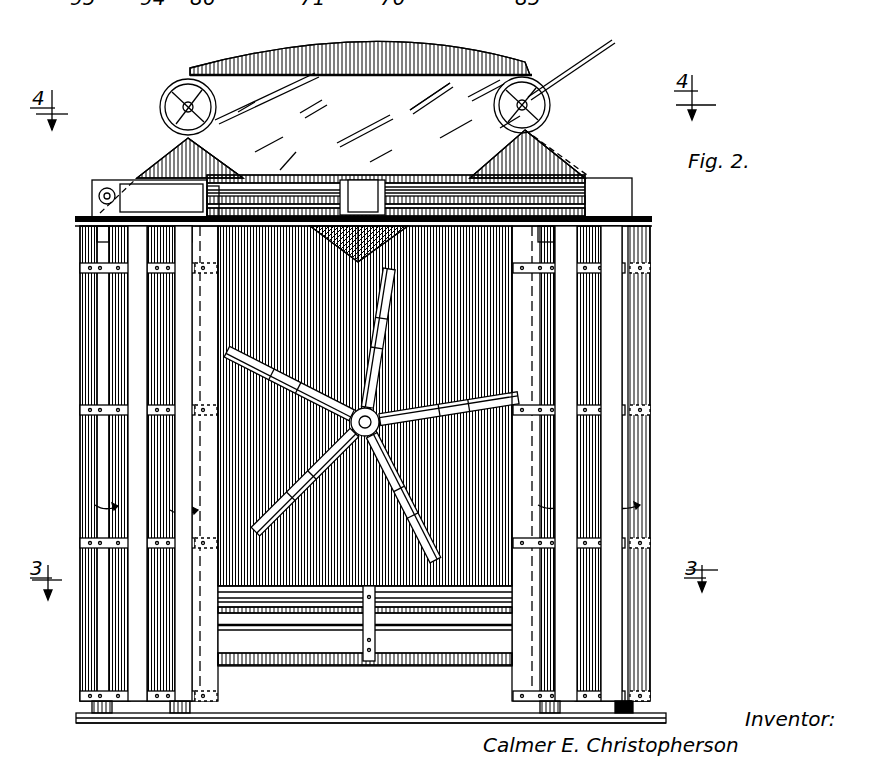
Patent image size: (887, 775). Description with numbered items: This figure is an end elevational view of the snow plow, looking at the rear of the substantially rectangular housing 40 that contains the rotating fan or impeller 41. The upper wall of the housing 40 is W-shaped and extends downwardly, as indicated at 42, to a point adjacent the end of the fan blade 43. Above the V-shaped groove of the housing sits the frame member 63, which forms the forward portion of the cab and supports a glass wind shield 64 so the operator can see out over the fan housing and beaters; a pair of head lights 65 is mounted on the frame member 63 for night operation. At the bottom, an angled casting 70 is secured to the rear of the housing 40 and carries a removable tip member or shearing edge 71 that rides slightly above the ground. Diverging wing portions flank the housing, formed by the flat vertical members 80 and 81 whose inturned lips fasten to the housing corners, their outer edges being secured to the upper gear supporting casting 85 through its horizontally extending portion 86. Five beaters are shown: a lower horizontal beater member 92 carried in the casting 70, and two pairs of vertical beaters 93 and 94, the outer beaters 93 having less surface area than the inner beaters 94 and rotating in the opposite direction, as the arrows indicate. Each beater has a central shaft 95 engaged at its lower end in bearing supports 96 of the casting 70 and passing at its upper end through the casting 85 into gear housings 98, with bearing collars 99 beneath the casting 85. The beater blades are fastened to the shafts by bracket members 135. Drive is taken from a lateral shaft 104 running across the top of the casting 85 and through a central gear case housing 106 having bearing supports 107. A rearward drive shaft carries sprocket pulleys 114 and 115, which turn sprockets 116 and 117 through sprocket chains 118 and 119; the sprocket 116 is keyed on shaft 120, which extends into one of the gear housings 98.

The housing 40 is at (276, 285).
The impeller 41 is at (371, 415).
The W-shaped upper defining wall 42 is at (362, 299).
The fan blade 43 is at (462, 398).
The frame member 63 is at (262, 62).
The wind shield 64 is at (332, 92).
The head lights 65 is at (172, 95).
The angled casting 70 is at (398, 712).
The tip member 71 is at (332, 724).
The vertically extending member 80 is at (100, 240).
The vertically extending member 81 is at (632, 236).
The upper gear supporting casting 85 is at (408, 228).
The horizontally extending portion 86 is at (645, 219).
The lower horizontally mounted beater member 92 is at (398, 593).
The outer beaters 93 is at (90, 344).
The inner beaters 94 is at (210, 316).
The shaft members 95 is at (312, 616).
The bearing supports 96 is at (188, 715).
The gear housings 98 is at (100, 185).
The bearing collars 99 is at (100, 230).
The shaft 104 is at (462, 162).
The gear case housing 106 is at (305, 178).
The bearing supports 107 is at (352, 178).
The sprocket pulley 114 is at (282, 135).
The sprocket pulley 115 is at (482, 165).
The sprocket 116 is at (175, 160).
The sprocket 117 is at (612, 127).
The sprocket chain 118 is at (150, 168).
The sprocket chain 119 is at (590, 62).
The shaft 120 is at (98, 197).
The bracket members 135 is at (92, 268).